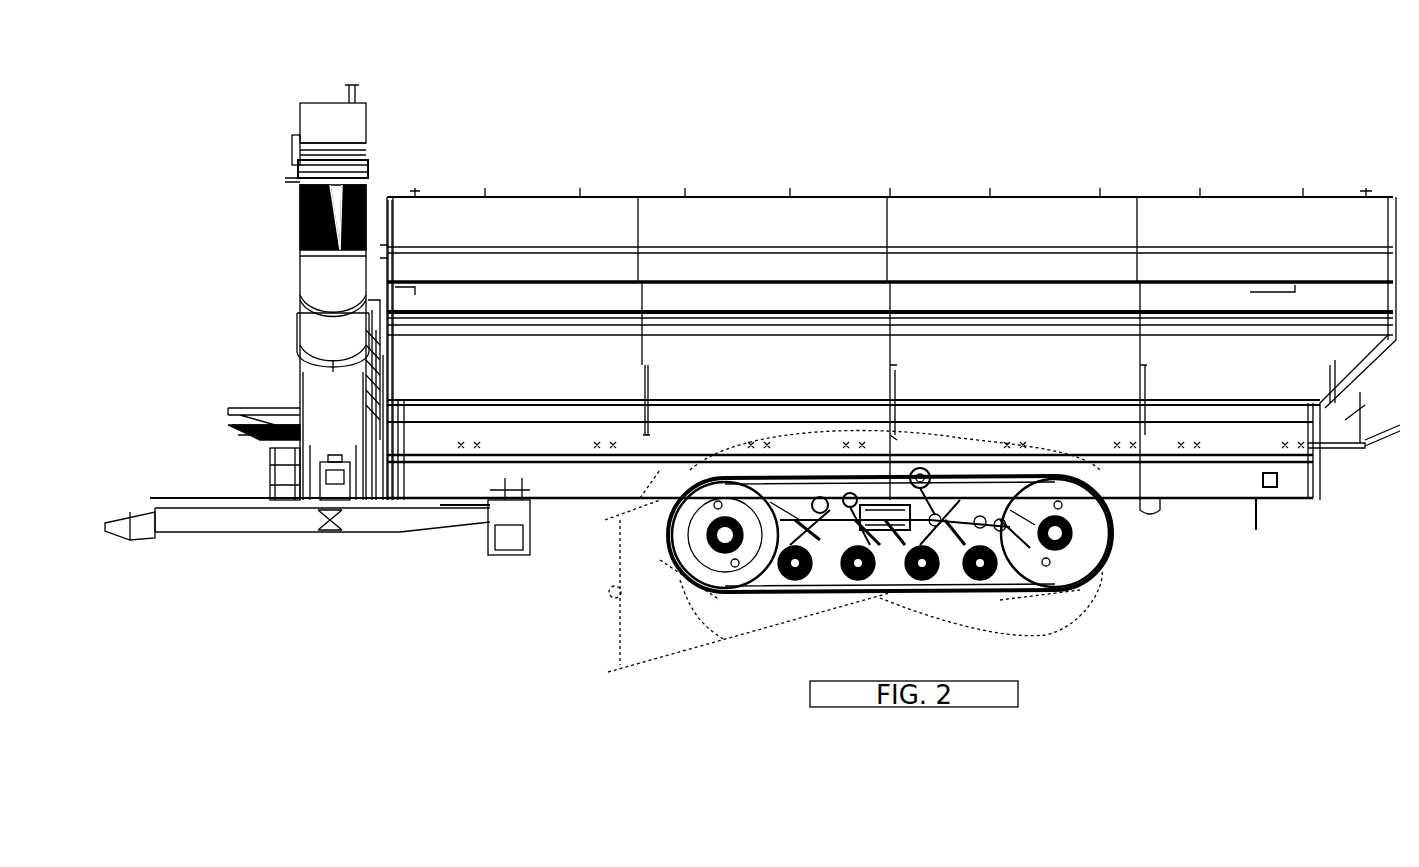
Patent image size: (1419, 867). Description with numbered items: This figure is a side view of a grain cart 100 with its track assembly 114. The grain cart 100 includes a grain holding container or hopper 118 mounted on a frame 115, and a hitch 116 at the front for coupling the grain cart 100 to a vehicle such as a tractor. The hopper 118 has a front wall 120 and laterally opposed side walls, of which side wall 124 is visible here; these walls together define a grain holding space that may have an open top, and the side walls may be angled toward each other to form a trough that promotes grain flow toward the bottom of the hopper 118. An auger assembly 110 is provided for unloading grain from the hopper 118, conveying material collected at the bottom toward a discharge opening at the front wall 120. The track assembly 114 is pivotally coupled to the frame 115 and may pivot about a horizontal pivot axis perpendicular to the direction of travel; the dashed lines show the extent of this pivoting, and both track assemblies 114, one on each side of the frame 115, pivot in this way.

The grain cart 100 is at (874, 135).
The auger assembly 110 is at (350, 120).
The track assembly 114 is at (1105, 532).
The frame 115 is at (1225, 478).
The hitch 116 is at (128, 514).
The hopper 118 is at (975, 195).
The front wall 120 is at (316, 350).
The side wall 124 is at (1205, 214).